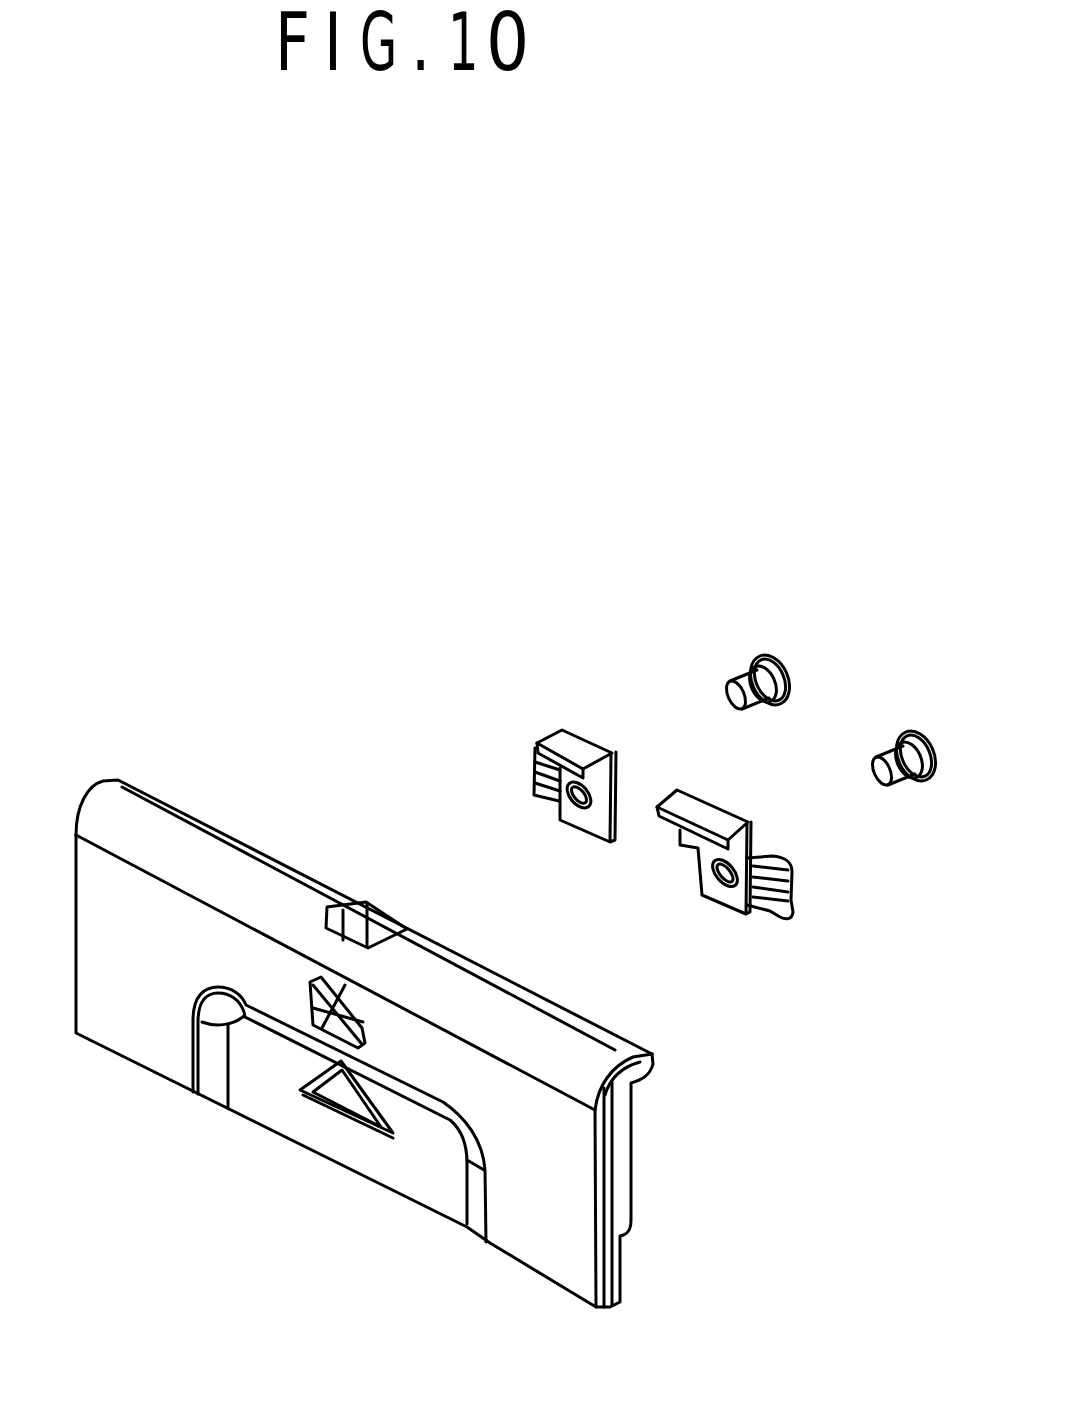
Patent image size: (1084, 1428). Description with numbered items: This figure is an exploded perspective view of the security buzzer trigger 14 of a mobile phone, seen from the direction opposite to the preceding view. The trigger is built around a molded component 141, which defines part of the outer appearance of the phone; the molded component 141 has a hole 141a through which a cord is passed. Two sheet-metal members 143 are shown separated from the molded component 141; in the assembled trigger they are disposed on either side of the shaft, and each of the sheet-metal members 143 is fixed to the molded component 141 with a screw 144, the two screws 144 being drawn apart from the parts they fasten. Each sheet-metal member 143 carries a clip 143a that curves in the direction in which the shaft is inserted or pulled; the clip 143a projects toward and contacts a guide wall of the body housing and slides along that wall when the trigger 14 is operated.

The security buzzer trigger 14 is at (315, 690).
The molded component 141 is at (158, 842).
The hole 141a is at (307, 996).
The sheet-metal members 143 is at (693, 808).
The clip 143a is at (543, 780).
The screw 144 is at (893, 753).